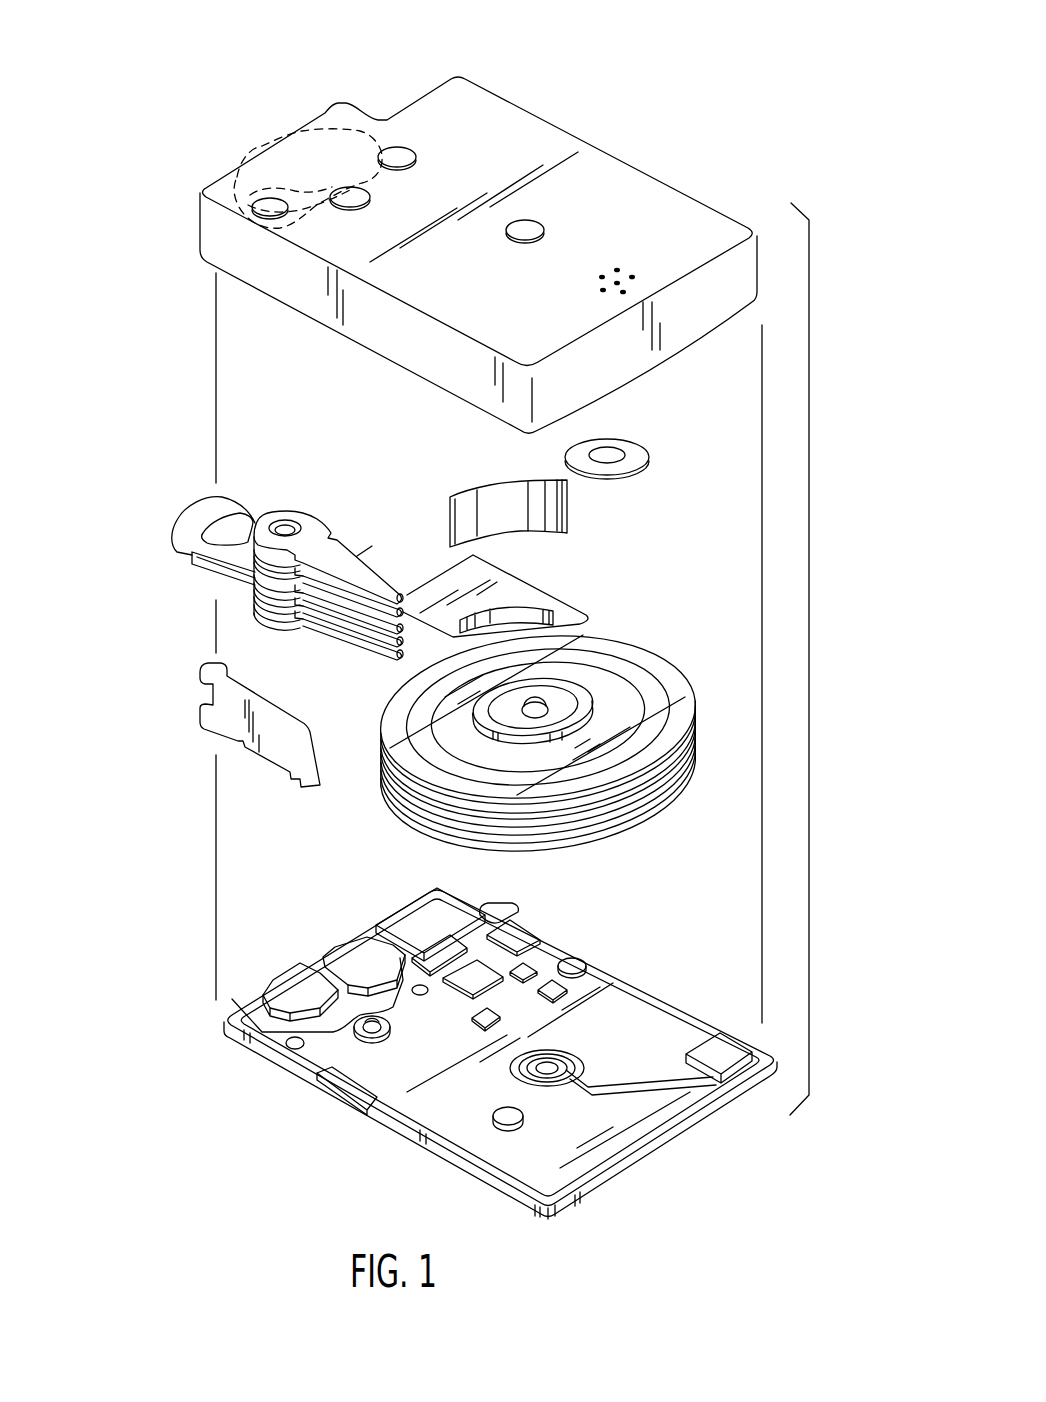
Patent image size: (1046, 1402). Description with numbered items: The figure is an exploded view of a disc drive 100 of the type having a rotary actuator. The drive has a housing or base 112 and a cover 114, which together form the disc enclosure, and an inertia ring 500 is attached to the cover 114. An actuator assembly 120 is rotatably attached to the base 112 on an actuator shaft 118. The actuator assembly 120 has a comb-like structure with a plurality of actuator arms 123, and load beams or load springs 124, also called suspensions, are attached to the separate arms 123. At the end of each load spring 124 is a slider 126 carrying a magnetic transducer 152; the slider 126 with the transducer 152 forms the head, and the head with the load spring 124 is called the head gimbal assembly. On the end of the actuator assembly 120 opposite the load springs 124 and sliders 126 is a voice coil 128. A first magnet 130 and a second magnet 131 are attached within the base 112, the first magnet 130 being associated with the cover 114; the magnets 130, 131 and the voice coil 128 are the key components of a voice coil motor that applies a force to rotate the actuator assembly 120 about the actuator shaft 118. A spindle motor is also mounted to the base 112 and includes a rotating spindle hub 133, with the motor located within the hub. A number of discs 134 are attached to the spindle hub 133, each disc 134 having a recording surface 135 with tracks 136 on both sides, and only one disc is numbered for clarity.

The disc drive 100 is at (620, 88).
The base 112 is at (667, 1023).
The cover 114 is at (640, 193).
The actuator shaft 118 is at (283, 522).
The actuator assembly 120 is at (203, 578).
The actuator arms 123 is at (308, 520).
The load springs 124 is at (357, 560).
The slider 126 is at (400, 593).
The voice coil 128 is at (190, 530).
The first magnet 130 is at (307, 138).
The second magnet 131 is at (283, 987).
The spindle hub 133 is at (540, 702).
The discs 134 is at (693, 737).
The recording surface 135 is at (664, 680).
The tracks 136 is at (623, 772).
The magnetic transducer 152 is at (403, 597).
The inertia ring 500 is at (633, 445).